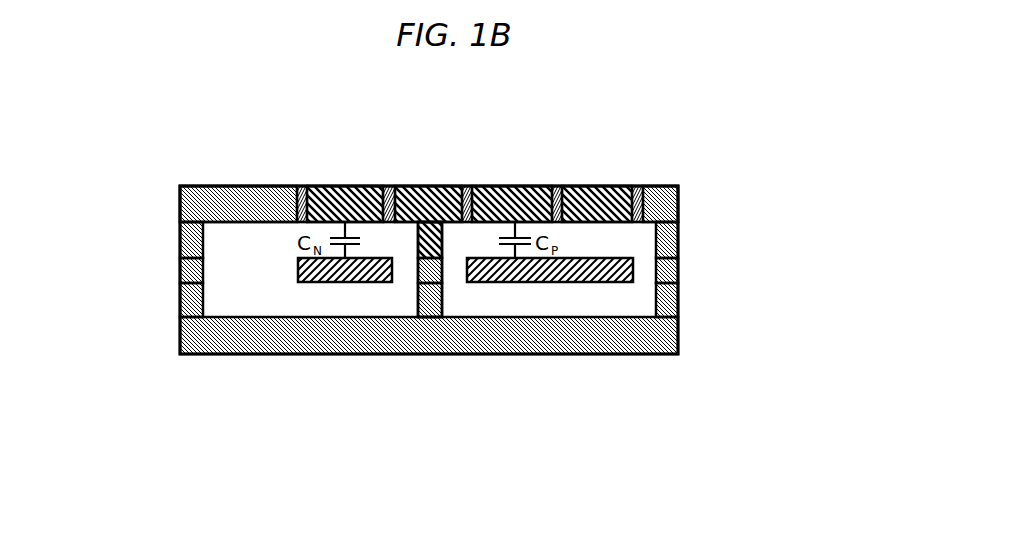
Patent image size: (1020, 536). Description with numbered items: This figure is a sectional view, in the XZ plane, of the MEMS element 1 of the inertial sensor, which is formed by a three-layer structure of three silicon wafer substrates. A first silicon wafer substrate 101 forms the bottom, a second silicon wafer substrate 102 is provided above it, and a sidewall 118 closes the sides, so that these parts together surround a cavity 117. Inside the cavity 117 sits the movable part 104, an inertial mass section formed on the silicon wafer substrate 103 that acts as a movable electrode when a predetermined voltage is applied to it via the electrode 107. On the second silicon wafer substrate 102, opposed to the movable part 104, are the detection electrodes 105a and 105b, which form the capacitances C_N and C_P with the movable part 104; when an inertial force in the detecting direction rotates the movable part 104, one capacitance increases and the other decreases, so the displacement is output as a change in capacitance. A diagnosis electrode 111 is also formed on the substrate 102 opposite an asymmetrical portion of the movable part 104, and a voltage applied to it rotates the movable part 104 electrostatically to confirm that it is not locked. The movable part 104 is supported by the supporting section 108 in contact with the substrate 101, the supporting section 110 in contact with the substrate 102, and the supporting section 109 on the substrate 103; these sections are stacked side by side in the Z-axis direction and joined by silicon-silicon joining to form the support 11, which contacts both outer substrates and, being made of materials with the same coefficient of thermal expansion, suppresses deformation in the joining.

The MEMS element 1 is at (120, 129).
The support 11 is at (560, 410).
The first silicon wafer substrate 101 is at (678, 332).
The second silicon wafer substrate 102 is at (678, 203).
The silicon wafer substrate 103 is at (678, 258).
The movable part 104 is at (605, 258).
The detection electrode 105a is at (327, 187).
The detection electrode 105b is at (520, 187).
The electrode 107 is at (423, 187).
The supporting section 108 is at (442, 308).
The supporting section 109 is at (418, 280).
The supporting section 110 is at (418, 253).
The diagnosis electrode 111 is at (598, 187).
The cavity 117 is at (215, 236).
The sidewall 118 is at (167, 225).